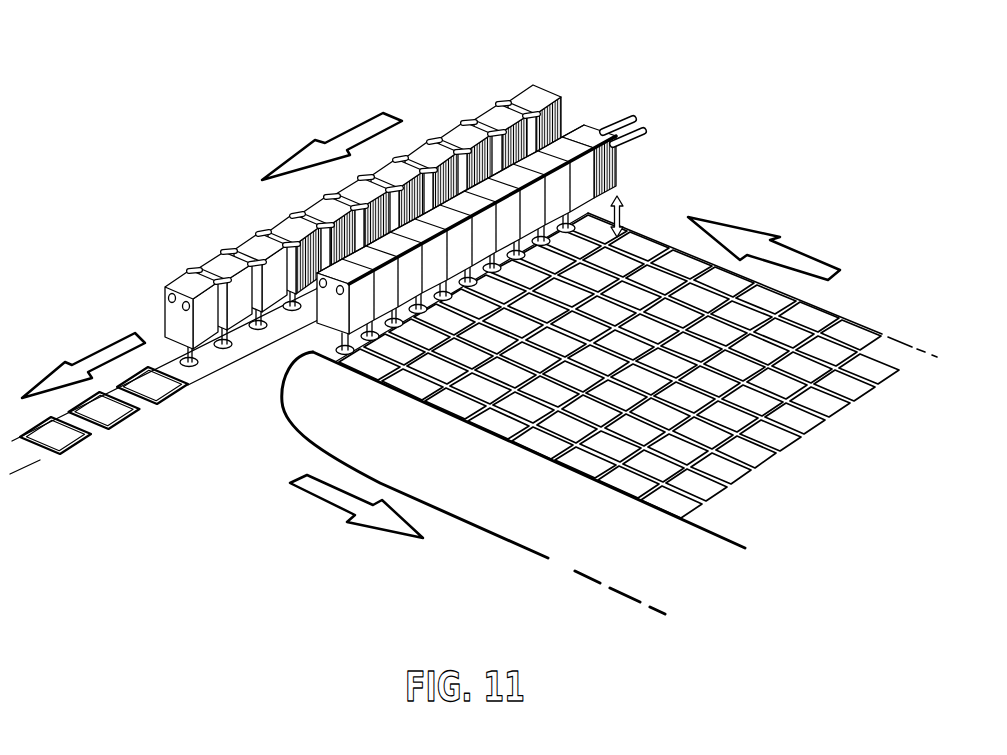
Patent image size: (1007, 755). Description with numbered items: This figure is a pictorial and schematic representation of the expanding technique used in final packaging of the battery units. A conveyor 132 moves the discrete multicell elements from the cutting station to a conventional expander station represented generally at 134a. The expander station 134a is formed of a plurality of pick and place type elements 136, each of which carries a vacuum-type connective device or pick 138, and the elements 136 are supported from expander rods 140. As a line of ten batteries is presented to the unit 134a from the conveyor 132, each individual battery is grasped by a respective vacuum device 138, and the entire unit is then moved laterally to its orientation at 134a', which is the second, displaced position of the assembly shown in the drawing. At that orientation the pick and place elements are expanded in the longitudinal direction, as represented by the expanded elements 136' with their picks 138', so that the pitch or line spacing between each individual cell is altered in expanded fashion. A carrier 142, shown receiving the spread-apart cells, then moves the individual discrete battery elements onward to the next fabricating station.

The conveyor 132 is at (528, 549).
The expander station 134a is at (495, 262).
The expanded orientation of expander unit 134a' is at (339, 224).
The pick and place element 136 is at (458, 258).
The expanded pick and place element 136' is at (339, 217).
The vacuum-type connective device 138 is at (406, 323).
The vacuum-type connective device in expanded position 138' is at (253, 351).
The expander rods 140 is at (628, 156).
The carrier 142 is at (37, 460).